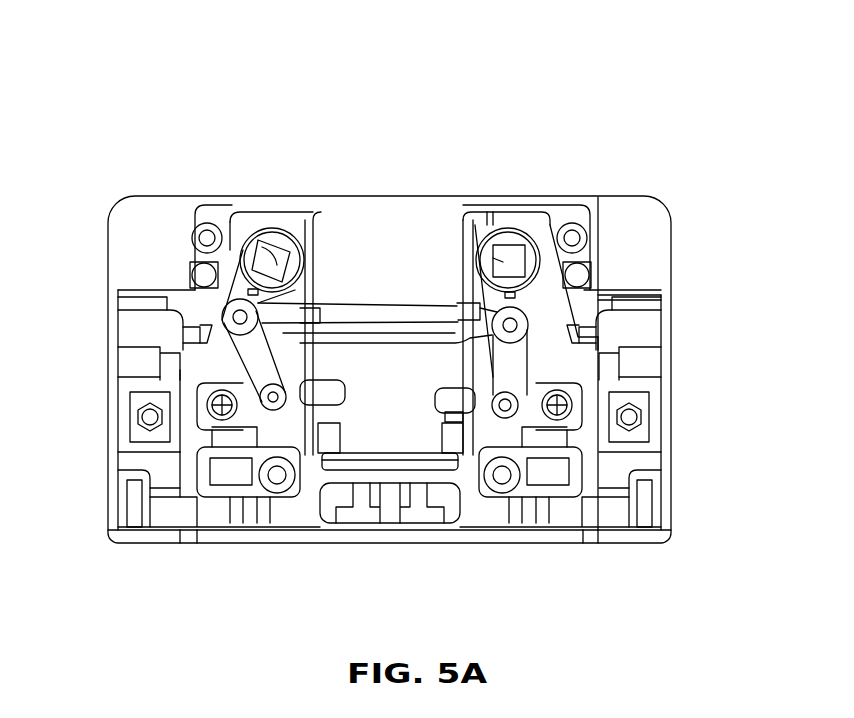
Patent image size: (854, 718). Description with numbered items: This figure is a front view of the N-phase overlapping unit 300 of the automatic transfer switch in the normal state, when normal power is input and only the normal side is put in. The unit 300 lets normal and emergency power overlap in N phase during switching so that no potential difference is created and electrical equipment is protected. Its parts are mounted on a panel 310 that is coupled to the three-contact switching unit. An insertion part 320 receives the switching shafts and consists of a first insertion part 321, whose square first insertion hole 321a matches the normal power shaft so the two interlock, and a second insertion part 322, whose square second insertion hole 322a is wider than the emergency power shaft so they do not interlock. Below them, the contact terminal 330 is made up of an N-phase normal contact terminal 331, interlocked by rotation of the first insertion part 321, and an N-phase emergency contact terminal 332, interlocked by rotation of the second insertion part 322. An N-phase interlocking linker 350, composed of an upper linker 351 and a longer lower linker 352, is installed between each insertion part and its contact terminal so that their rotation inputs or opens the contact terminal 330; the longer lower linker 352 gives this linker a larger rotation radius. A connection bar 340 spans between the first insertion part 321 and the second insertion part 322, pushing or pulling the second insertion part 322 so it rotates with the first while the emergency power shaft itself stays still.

The N-phase overlapping unit 300 is at (683, 142).
The panel 310 is at (622, 197).
The insertion part 320 is at (512, 227).
The first insertion part 321 is at (530, 294).
The first insertion hole 321a is at (503, 260).
The second insertion part 322 is at (267, 257).
The second insertion hole 322a is at (237, 287).
The contact terminal 330 is at (375, 455).
The N-phase normal contact terminal 331 is at (487, 413).
The N-phase emergency contact terminal 332 is at (288, 410).
The connection bar 340 is at (342, 303).
The N-phase interlocking linker 350 is at (197, 273).
The upper linker 351 is at (590, 303).
The lower linker 352 is at (590, 358).